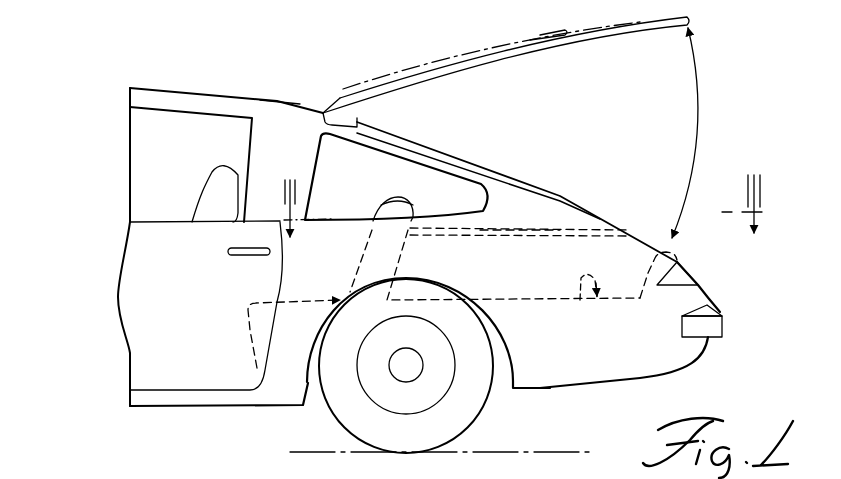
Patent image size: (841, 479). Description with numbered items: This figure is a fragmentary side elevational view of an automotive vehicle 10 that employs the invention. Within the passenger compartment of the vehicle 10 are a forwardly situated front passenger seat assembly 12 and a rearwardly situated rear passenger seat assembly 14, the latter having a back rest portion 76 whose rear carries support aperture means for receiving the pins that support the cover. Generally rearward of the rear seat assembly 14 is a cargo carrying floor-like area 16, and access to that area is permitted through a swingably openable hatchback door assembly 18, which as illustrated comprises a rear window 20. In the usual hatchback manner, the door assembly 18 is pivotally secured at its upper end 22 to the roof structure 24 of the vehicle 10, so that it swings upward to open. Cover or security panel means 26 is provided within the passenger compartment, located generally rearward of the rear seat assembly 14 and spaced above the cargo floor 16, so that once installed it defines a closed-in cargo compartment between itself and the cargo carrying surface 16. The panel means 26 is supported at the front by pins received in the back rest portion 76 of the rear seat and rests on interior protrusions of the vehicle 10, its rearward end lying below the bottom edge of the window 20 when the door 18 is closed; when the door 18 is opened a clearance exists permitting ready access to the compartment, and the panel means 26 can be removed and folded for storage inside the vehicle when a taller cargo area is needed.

The automotive vehicle 10 is at (127, 198).
The front passenger seat assembly 12 is at (207, 172).
The rear passenger seat assembly 14 is at (376, 203).
The back rest portion 76 is at (398, 207).
The cargo carrying floor-like area 16 is at (580, 300).
The hatchback door assembly 18 is at (587, 42).
The rear window 20 is at (424, 71).
The upper end 22 is at (339, 116).
The roof structure 24 is at (280, 101).
The cover or security panel means 26 is at (511, 227).